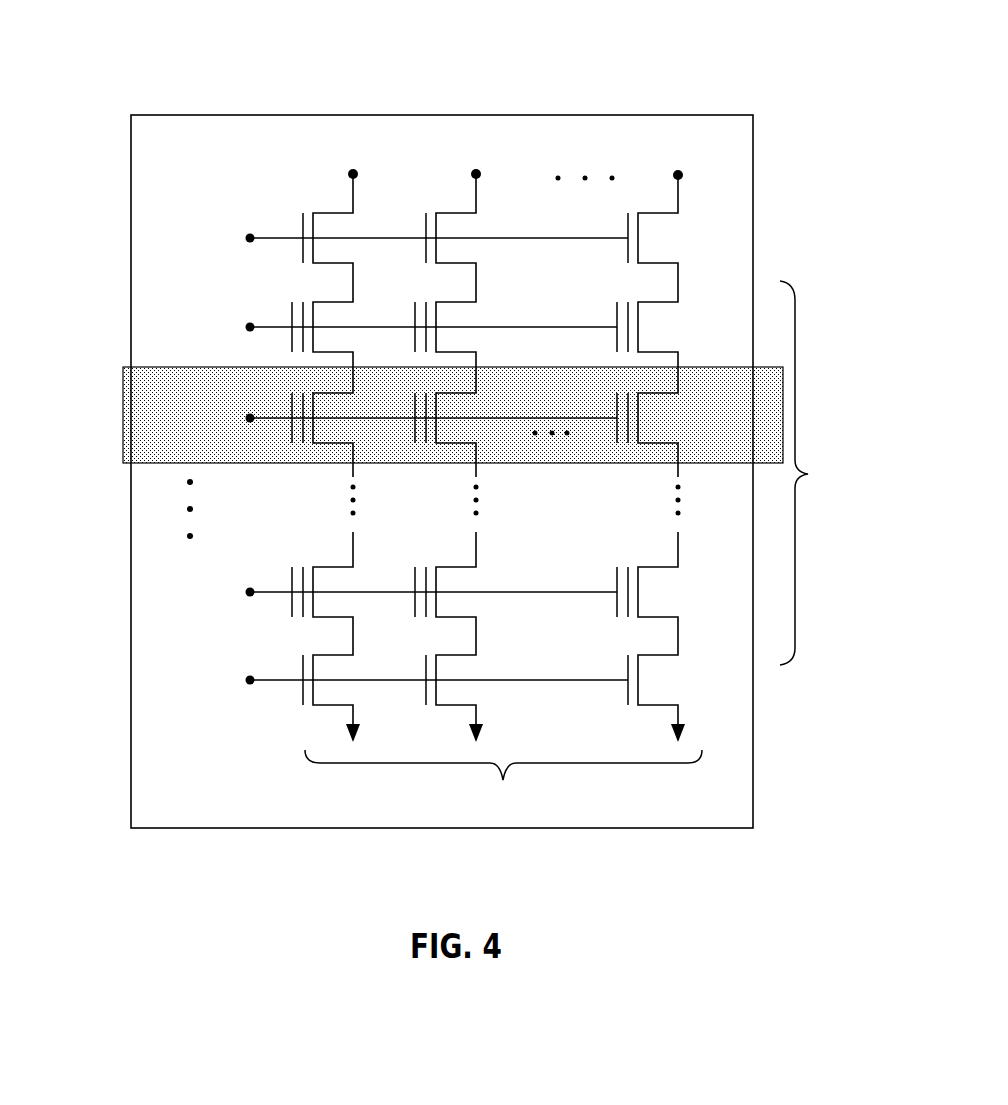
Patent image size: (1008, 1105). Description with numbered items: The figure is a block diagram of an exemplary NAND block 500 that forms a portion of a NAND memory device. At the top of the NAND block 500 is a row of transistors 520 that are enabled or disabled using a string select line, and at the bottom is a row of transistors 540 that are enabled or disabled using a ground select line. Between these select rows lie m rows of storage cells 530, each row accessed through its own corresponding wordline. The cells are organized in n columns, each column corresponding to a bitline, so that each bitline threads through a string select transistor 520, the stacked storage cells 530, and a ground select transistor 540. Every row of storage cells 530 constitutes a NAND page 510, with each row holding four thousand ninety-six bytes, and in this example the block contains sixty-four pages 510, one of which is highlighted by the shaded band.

The NAND block 500 is at (473, 30).
The NAND page 510 is at (412, 415).
The transistors 520 is at (303, 217).
The storage cells 530 is at (292, 304).
The transistors 540 is at (303, 666).